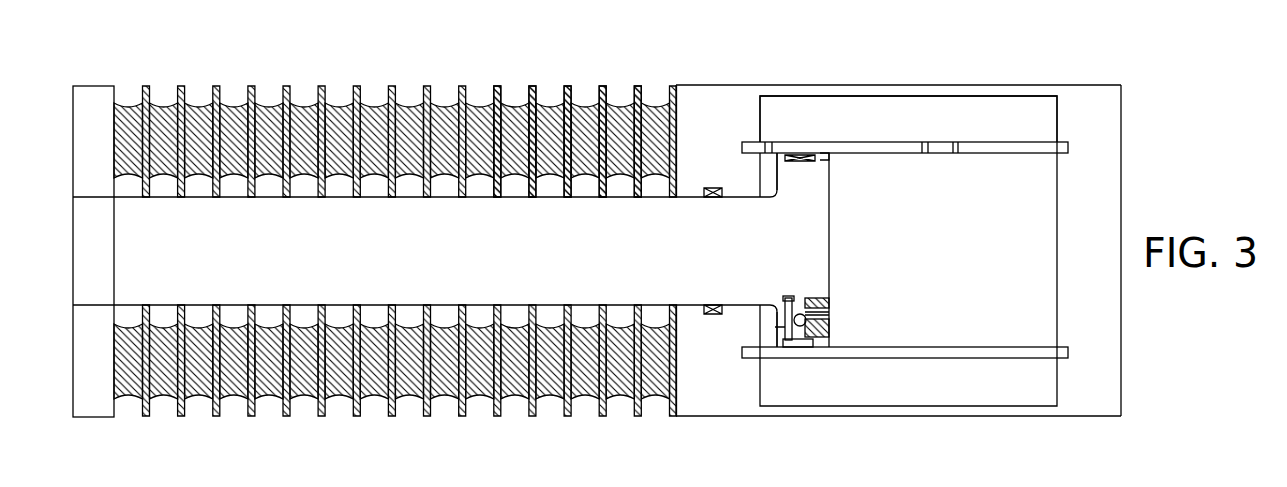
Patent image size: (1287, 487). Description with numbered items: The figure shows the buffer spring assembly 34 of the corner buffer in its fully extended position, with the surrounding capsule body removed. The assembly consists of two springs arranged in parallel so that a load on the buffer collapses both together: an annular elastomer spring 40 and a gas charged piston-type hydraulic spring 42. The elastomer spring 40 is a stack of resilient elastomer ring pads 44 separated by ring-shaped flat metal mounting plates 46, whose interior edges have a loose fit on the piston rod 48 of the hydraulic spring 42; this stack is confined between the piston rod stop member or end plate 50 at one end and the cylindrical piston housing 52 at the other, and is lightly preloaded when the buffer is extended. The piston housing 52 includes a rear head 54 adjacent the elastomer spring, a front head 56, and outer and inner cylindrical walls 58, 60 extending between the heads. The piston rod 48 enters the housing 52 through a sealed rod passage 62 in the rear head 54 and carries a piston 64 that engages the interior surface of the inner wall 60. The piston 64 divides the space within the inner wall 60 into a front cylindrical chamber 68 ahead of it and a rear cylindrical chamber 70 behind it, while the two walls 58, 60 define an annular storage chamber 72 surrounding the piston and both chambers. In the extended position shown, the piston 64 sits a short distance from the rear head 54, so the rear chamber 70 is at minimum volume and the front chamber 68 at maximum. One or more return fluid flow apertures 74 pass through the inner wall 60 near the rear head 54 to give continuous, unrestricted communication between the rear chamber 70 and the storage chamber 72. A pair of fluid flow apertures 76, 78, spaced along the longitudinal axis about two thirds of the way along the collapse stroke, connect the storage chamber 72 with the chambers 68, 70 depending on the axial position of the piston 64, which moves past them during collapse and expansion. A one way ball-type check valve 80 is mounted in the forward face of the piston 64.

The buffer spring assembly 34 is at (395, 253).
The annular elastomer spring 40 is at (668, 428).
The gas charged piston-type hydraulic spring 42 is at (898, 250).
The elastomer ring pads 44 is at (552, 107).
The ring-shaped flat metal mounting plates 46 is at (638, 107).
The piston rod 48 is at (390, 266).
The piston rod stop member 50 is at (99, 86).
The cylindrical piston housing 52 is at (800, 86).
The rear head 54 is at (716, 416).
The front head 56 is at (1086, 410).
The outer cylindrical wall 58 is at (893, 416).
The inner cylindrical wall 60 is at (898, 352).
The rod passage 62 is at (683, 198).
The piston 64 is at (830, 233).
The front cylindrical chamber 68 is at (985, 281).
The rear cylindrical chamber 70 is at (765, 348).
The annular storage chamber 72 is at (958, 126).
The return fluid flow apertures 74 is at (905, 161).
The fluid flow aperture 76 is at (924, 154).
The fluid flow aperture 78 is at (955, 154).
The one way ball-type check valve 80 is at (831, 303).